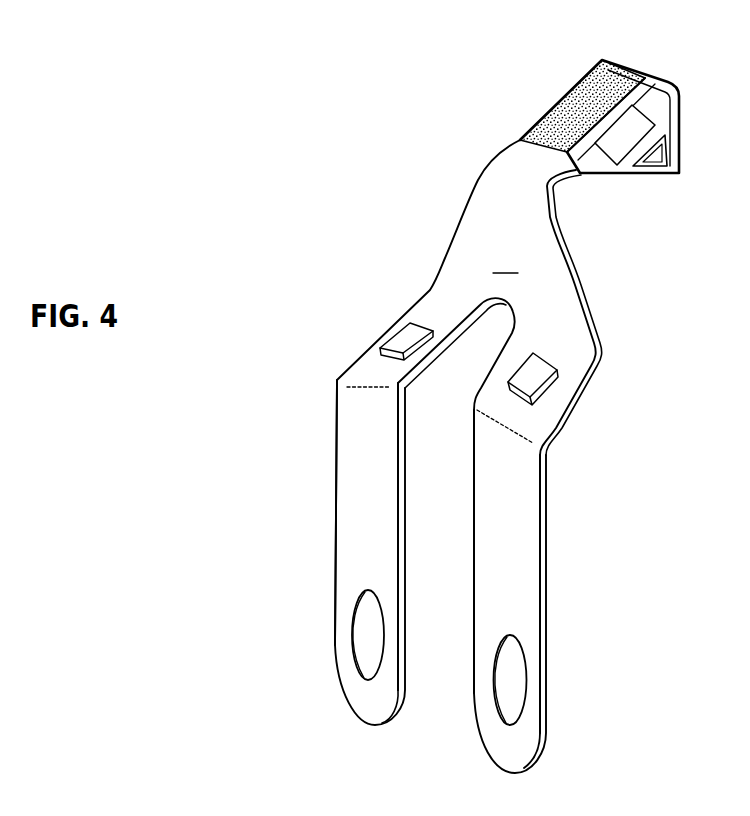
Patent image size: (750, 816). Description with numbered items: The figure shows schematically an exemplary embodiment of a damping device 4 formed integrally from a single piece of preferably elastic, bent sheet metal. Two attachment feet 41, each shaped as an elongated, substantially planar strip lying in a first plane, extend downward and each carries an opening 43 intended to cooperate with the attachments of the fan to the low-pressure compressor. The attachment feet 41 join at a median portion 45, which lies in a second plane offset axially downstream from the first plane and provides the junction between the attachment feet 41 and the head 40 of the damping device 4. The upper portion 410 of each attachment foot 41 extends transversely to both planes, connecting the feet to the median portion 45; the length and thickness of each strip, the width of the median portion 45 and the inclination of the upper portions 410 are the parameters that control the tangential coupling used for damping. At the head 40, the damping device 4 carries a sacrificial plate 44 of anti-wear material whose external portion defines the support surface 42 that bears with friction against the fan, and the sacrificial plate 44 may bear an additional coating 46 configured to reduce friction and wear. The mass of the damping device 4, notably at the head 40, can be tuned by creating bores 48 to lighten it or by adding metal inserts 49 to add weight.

The damping device 4 is at (286, 196).
The head 40 is at (626, 178).
The attachment feet 41 is at (363, 495).
The support surface 42 is at (579, 71).
The opening 43 is at (362, 637).
The sacrificial plate 44 is at (560, 111).
The median portion 45 is at (505, 260).
The additional coating 46 is at (593, 68).
The bores 48 is at (678, 147).
The inserts 49 is at (400, 325).
The upper portion 410 is at (375, 370).